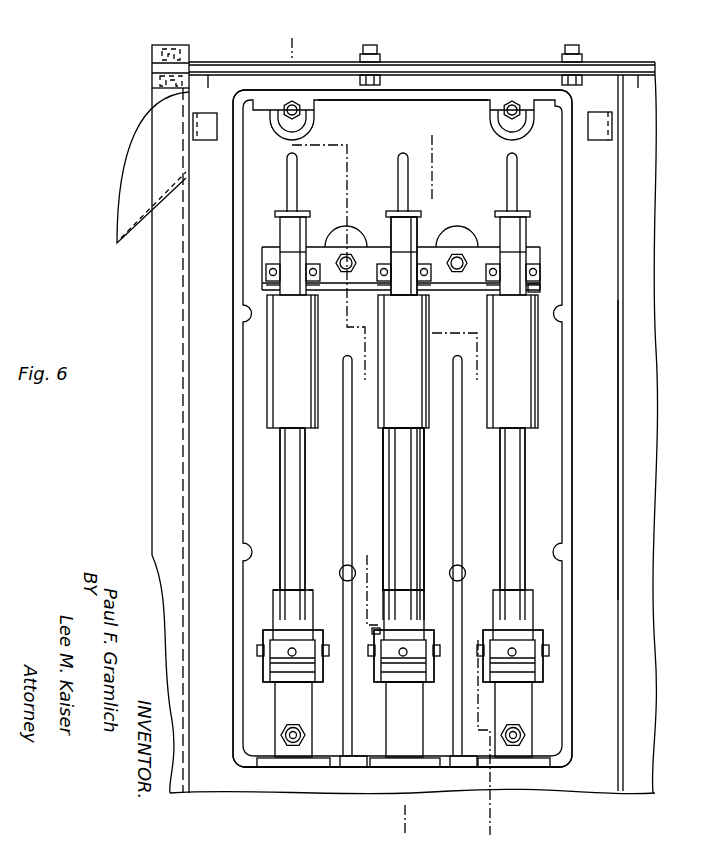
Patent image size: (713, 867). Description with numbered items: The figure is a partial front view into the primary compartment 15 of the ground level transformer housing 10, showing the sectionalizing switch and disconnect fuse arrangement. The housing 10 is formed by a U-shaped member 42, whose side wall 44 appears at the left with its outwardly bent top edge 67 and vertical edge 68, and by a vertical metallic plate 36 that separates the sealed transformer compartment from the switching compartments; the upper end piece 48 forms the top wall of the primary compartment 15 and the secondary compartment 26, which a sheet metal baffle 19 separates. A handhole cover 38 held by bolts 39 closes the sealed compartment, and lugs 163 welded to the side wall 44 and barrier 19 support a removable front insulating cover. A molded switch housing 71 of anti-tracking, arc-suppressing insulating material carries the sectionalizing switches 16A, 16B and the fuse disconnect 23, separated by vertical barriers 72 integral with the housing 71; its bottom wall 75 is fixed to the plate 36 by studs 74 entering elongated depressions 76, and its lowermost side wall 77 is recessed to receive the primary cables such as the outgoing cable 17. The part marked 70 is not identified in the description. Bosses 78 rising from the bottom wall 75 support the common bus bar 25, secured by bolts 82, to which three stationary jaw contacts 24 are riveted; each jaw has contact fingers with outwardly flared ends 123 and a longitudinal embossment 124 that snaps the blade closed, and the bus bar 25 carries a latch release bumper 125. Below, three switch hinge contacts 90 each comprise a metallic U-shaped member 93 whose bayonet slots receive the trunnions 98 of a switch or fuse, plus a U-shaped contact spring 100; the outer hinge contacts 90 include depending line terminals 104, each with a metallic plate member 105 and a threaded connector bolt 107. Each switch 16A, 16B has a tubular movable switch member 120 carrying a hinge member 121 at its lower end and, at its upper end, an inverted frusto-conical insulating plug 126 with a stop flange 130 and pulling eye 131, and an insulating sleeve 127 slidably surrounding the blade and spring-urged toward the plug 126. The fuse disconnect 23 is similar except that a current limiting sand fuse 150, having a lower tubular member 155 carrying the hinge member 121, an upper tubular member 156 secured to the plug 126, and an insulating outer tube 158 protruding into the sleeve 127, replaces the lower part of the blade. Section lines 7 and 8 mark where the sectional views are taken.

The section line 7- 7 is at (318, 47).
The section line 8- 8 is at (462, 143).
The metallic housing 10 is at (113, 331).
The primary compartment 15 is at (218, 749).
The sectionalizing switch 16A is at (282, 459).
The second sectionalizing switch 16B is at (506, 459).
The outgoing underground primary jacketed cable 17 is at (308, 796).
The baffle 19 is at (620, 460).
The fuse disconnect 23 is at (380, 459).
The stationary jaw contact 24 is at (414, 255).
The bus bar 25 is at (262, 257).
The secondary compartment 26 is at (650, 522).
The vertical metallic plate 36 is at (233, 88).
The handhole cover 38 is at (478, 62).
The bolts 39 is at (160, 50).
The U-shaped member 42 is at (150, 284).
The side wall 44 is at (183, 258).
The upper end piece 48 is at (208, 78).
The top edge 67 is at (160, 78).
The vertical edge 68 is at (165, 444).
The housing 70 is at (581, 469).
The switch housing 71 is at (566, 520).
The vertically extending barriers 72 is at (345, 525).
The studs 74 is at (288, 116).
The bottom wall 75 is at (358, 110).
The elongated depressions 76 is at (305, 125).
The lowermost side wall 77 is at (352, 764).
The bosses 78 is at (343, 240).
The bolts 82 is at (345, 274).
The switch hinge contact 90 is at (270, 617).
The U-shaped member 93 is at (264, 637).
The trunnions 98 is at (324, 645).
The contact spring 100 is at (277, 592).
The line terminal 104 is at (286, 769).
The metallic plate member 105 is at (287, 700).
The threaded connector bolt 107 is at (281, 733).
The movable switch member 120 is at (293, 298).
The hinge member 121 is at (283, 657).
The outwardly flared ends 123 is at (403, 266).
The longitudinal embossment 124 is at (322, 283).
The latch release bumper 125 is at (542, 290).
The inverted frusto-conical plug 126 is at (283, 231).
The sleeve 127 is at (283, 366).
The stop flange 130 is at (280, 213).
The pulling eye 131 is at (289, 170).
The current limiting sand fuse 150 is at (429, 494).
The lower tubular metallic member 155 is at (386, 640).
The upper tubular metallic member 156 is at (403, 297).
The outer tube 158 is at (392, 505).
The lugs 163 is at (205, 128).